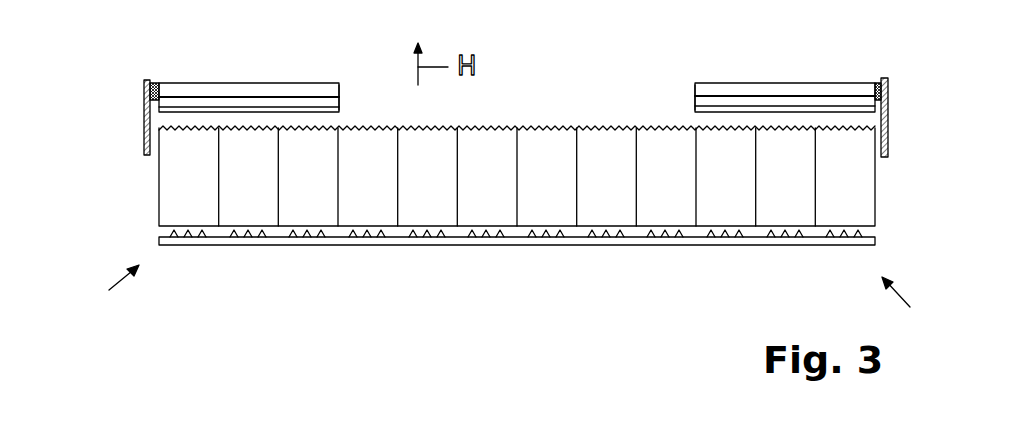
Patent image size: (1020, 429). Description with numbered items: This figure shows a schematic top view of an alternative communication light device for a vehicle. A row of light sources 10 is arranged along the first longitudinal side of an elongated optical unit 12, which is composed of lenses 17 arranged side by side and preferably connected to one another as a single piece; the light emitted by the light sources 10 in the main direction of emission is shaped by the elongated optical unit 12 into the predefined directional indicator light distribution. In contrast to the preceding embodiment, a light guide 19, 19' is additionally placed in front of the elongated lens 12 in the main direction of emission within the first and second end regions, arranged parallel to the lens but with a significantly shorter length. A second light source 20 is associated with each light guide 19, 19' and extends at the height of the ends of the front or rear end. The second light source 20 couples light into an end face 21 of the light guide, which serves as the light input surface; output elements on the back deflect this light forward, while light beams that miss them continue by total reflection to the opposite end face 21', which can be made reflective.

The elongated optical unit 12 is at (593, 148).
The lenses 17 is at (542, 160).
The light sources 10 is at (293, 237).
The light guide 19 is at (249, 63).
The light guide 19' is at (785, 68).
The second light source 20 is at (147, 93).
The end face 21 is at (515, 60).
The end face 21' is at (517, 69).